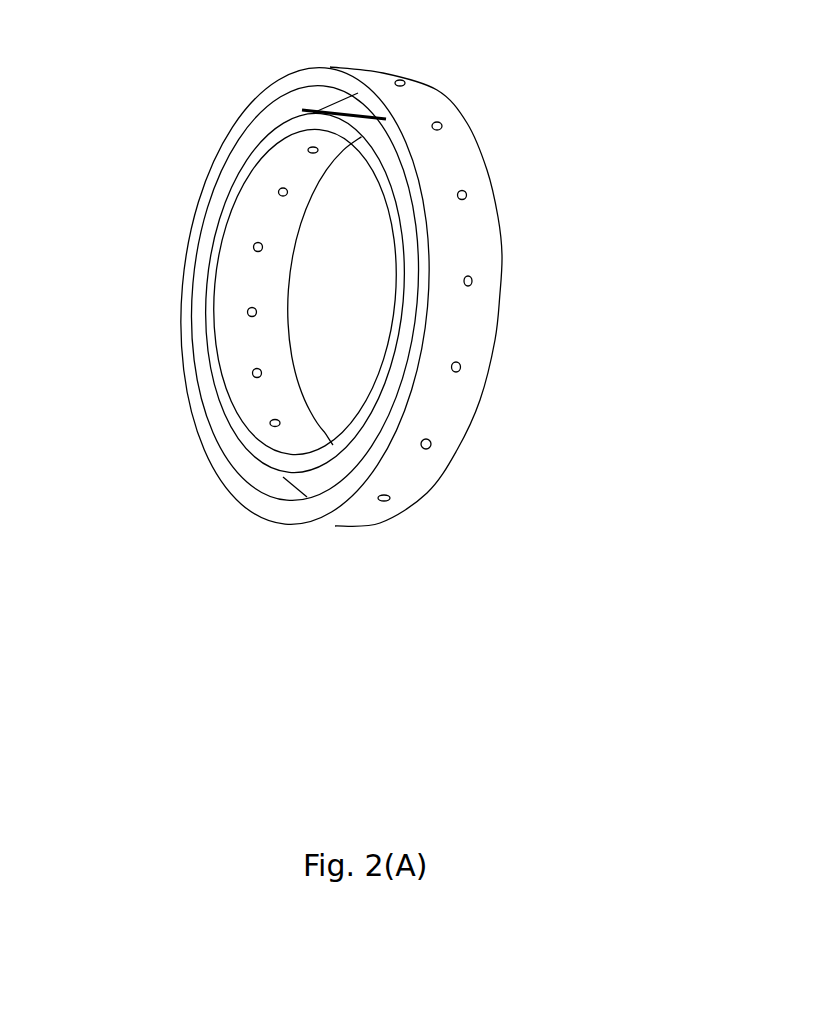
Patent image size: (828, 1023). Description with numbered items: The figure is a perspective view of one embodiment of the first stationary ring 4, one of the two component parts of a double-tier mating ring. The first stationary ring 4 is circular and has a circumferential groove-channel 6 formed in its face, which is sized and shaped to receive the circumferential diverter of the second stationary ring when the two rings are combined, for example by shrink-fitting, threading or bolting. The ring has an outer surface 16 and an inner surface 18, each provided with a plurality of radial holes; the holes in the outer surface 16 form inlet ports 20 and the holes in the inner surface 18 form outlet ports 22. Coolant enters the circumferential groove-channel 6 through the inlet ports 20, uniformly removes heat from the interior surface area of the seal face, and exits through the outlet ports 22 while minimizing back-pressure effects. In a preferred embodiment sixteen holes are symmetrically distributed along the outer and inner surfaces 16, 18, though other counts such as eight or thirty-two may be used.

The first stationary ring 4 is at (238, 277).
The circumferential groove-channel 6 is at (266, 478).
The outer surface 16 is at (478, 323).
The inner surface 18 is at (243, 272).
The inlet ports 20 is at (428, 447).
The outlet ports 22 is at (251, 316).